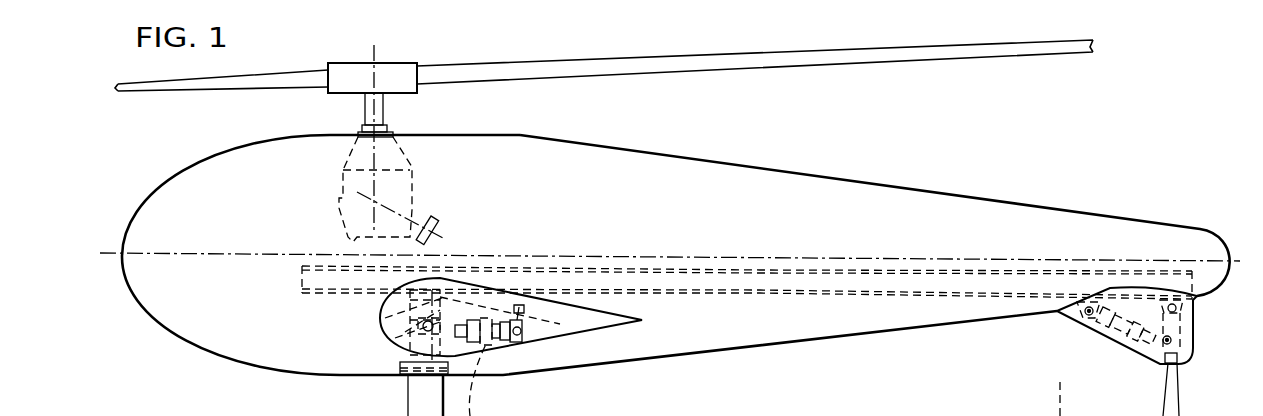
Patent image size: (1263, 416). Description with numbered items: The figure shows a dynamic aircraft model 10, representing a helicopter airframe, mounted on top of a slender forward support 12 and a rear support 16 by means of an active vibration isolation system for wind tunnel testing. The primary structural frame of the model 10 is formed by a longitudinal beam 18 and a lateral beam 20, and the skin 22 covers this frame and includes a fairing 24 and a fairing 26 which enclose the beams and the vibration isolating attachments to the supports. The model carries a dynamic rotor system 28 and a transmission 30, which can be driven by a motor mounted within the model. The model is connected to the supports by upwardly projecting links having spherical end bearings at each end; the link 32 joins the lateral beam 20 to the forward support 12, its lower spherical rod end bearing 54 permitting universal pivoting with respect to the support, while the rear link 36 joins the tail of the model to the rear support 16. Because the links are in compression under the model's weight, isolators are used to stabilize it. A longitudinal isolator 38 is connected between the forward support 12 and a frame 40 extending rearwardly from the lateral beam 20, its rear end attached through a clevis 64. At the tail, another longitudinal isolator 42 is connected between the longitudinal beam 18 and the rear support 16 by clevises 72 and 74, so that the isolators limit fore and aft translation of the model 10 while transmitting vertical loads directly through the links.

The aircraft model 10 is at (887, 158).
The forward support 12 is at (417, 393).
The rear support 16 is at (1180, 412).
The longitudinal beam 18 is at (633, 277).
The lateral beam 20 is at (410, 302).
The skin 22 is at (178, 178).
The fairing 24 is at (563, 300).
The fairing 26 is at (1195, 353).
The dynamic rotor system 28 is at (393, 72).
The transmission 30 is at (398, 162).
The link 32 is at (418, 326).
The rear link 36 is at (1183, 325).
The longitudinal isolator 38 is at (486, 379).
The frame 40 is at (560, 324).
The longitudinal isolator 42 is at (1112, 340).
The spherical rod end bearing 54 is at (417, 318).
The clevis 64 is at (515, 340).
The clevis 72 is at (1083, 313).
The clevis 74 is at (1160, 352).